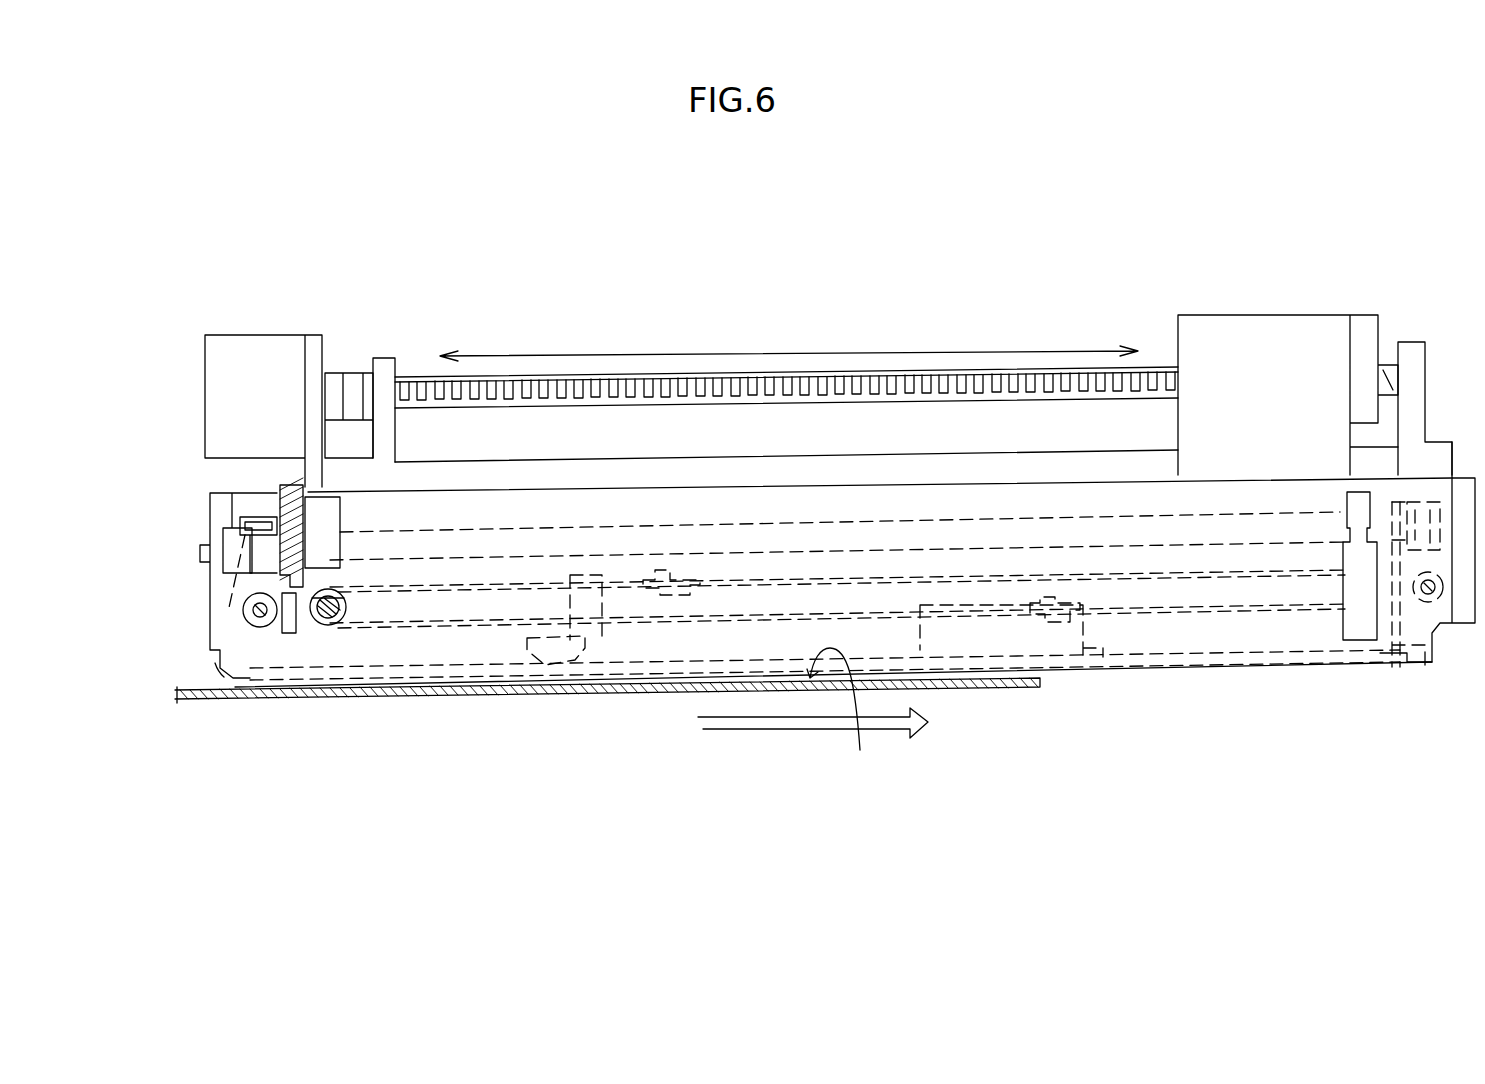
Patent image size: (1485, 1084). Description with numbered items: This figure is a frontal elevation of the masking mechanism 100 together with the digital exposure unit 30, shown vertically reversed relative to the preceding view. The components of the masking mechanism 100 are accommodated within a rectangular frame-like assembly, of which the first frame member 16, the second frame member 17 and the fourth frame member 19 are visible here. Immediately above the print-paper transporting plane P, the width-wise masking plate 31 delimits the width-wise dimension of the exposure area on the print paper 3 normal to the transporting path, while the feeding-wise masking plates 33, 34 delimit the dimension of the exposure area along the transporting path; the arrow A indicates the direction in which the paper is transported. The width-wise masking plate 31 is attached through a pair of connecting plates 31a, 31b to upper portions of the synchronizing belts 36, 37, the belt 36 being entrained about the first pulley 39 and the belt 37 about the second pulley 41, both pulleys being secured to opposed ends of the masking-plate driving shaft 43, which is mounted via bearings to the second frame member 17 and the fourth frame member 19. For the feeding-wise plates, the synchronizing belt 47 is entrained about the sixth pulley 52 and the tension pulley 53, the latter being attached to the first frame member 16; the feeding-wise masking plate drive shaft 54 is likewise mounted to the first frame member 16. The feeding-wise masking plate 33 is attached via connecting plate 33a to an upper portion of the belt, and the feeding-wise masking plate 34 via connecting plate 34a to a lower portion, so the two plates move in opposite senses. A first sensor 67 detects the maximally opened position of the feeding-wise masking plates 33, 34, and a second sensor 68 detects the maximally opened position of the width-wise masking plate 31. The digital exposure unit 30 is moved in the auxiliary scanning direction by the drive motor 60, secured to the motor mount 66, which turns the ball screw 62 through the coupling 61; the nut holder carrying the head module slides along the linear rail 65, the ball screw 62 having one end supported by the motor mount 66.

The masking mechanism 100 is at (1171, 166).
The drive motor 60 is at (276, 335).
The coupling 61 is at (355, 380).
The motor mount 66 is at (388, 358).
The linear rail 65 is at (698, 462).
The ball screw 62 is at (918, 372).
The digital exposure unit 30 is at (1248, 330).
The first pulley 39 is at (1438, 520).
The second frame member 17 is at (1463, 472).
The synchronizing belt 36 is at (1425, 500).
The masking-plate driving shaft 43 is at (1222, 520).
The first frame member 16 is at (864, 484).
The connecting plate 34a is at (985, 605).
The connecting plate 33a is at (608, 555).
The second pulley 41 is at (220, 648).
The second sensor 68 is at (292, 484).
The fourth frame member 19 is at (210, 493).
The synchronizing belt 37 is at (268, 578).
The connecting plate 31b is at (217, 667).
The feeding-wise masking plate drive shaft 54 is at (263, 628).
The tension pulley 53 is at (328, 626).
The synchronizing belt 47 is at (424, 628).
The print paper 3 is at (510, 698).
The feeding-wise masking plate 33 is at (592, 665).
The width-wise masking plate 31 is at (688, 672).
The paper feed direction A is at (777, 730).
The print-paper transporting plane P is at (846, 720).
The feeding-wise masking plate 34 is at (1082, 665).
The first sensor 67 is at (1357, 636).
The connecting plate 31a is at (1405, 670).
The sixth pulley 52 is at (1440, 630).